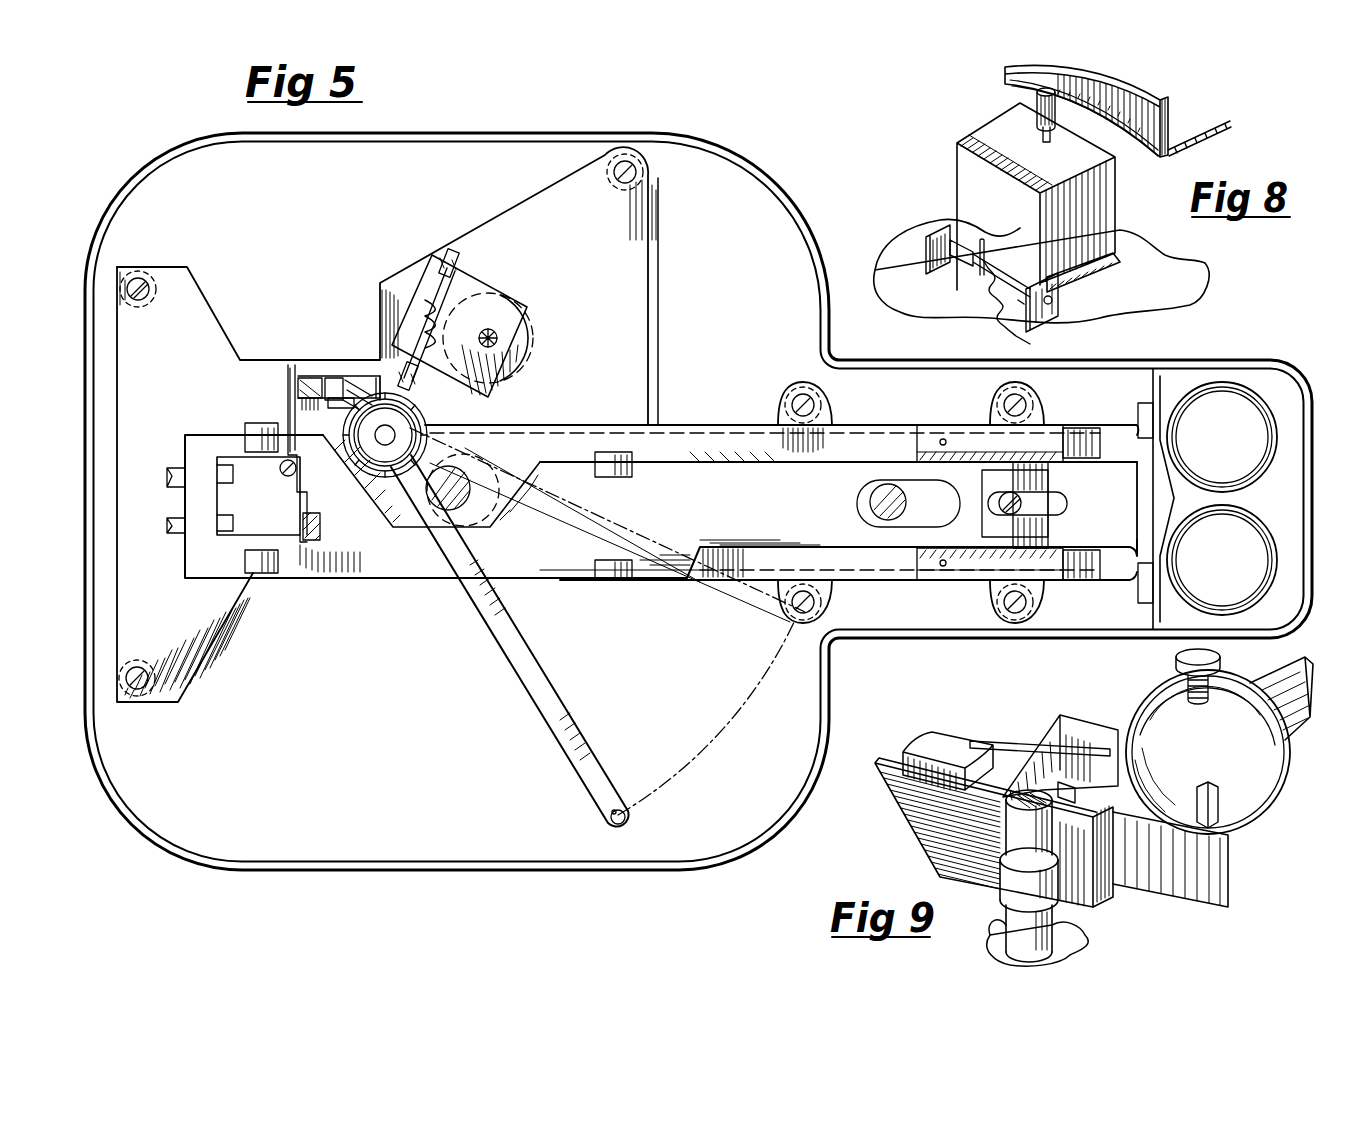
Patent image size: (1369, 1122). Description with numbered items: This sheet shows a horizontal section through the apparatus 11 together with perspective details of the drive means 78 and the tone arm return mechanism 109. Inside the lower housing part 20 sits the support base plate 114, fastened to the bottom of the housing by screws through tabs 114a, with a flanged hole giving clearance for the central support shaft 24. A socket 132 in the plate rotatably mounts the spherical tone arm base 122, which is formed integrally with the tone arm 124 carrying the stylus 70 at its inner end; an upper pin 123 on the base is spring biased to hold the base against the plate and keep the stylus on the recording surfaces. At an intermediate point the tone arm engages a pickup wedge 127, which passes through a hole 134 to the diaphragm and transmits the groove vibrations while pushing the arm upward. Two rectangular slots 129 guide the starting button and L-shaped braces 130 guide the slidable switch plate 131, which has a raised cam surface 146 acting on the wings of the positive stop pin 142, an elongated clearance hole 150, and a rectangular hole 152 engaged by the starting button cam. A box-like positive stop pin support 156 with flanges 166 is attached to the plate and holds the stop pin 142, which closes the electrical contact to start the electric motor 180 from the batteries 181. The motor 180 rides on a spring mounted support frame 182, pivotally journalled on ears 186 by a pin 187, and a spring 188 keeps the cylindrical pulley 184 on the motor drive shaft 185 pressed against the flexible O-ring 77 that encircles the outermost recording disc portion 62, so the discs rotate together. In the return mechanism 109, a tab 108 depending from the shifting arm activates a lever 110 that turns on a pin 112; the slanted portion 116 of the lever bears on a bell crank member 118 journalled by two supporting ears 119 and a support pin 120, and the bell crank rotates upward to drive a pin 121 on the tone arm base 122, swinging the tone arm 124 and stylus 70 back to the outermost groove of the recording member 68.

In FIG. 5, the housing 11 is at (727, 150).
In FIG. 5, the lower housing part 20 is at (350, 731).
In FIG. 5, the central support shaft 24 is at (872, 495).
In FIG. 8, the recording disc portion 62 is at (1166, 138).
In FIG. 8, the recording member 68 is at (1200, 140).
In FIG. 5, the stylus 70 is at (611, 817).
In FIG. 8, the flexible O-ring 77 is at (1156, 150).
In FIG. 5, the drive means 78 is at (491, 295).
In FIG. 8, the drive means 78 is at (1011, 222).
In FIG. 5, the tab 108 is at (321, 540).
In FIG. 9, the tab 108 is at (1220, 806).
In FIG. 9, the tone arm return mechanism 109 is at (1080, 802).
In FIG. 5, the lever 110 is at (289, 505).
In FIG. 9, the lever 110 is at (1184, 886).
In FIG. 5, the pin 112 is at (283, 473).
In FIG. 9, the pin 112 is at (1014, 918).
In FIG. 5, the support base plate 114 is at (182, 364).
In FIG. 8, the support base plate 114 is at (1182, 270).
In FIG. 9, the support base plate 114 is at (1082, 941).
In FIG. 5, the tabs 114a is at (608, 160).
In FIG. 5, the slanted portion 116 is at (303, 378).
In FIG. 9, the slanted portion 116 is at (921, 835).
In FIG. 5, the bell crank member 118 is at (314, 378).
In FIG. 9, the bell crank member 118 is at (926, 752).
In FIG. 5, the supporting ears 119 is at (343, 378).
In FIG. 9, the supporting ears 119 is at (1068, 790).
In FIG. 5, the support pin 120 is at (333, 402).
In FIG. 9, the support pin 120 is at (1066, 795).
In FIG. 5, the pin 121 is at (379, 372).
In FIG. 9, the pin 121 is at (988, 740).
In FIG. 5, the spherical tone arm base 122 is at (421, 422).
In FIG. 9, the spherical tone arm base 122 is at (1242, 744).
In FIG. 5, the upper pin 123 is at (372, 445).
In FIG. 9, the upper pin 123 is at (1190, 656).
In FIG. 5, the tone arm 124 is at (520, 680).
In FIG. 9, the tone arm 124 is at (1302, 716).
In FIG. 5, the pickup wedge 127 is at (462, 508).
In FIG. 5, the rectangular slots 129 is at (168, 525).
In FIG. 5, the L-shaped braces 130 is at (251, 437).
In FIG. 5, the switch plate 131 is at (736, 499).
In FIG. 5, the socket 132 is at (401, 408).
In FIG. 5, the hole 134 is at (470, 452).
In FIG. 5, the positive stop pin 142 is at (1060, 502).
In FIG. 5, the raised cam surface 146 is at (1046, 475).
In FIG. 5, the elongated clearance hole 150 is at (872, 508).
In FIG. 5, the rectangular hole 152 is at (301, 542).
In FIG. 5, the positive stop pin support 156 is at (1045, 450).
In FIG. 5, the flanges 166 is at (966, 440).
In FIG. 5, the electric motor 180 is at (536, 340).
In FIG. 8, the electric motor 180 is at (1097, 206).
In FIG. 5, the batteries 181 is at (1235, 429).
In FIG. 5, the support frame 182 is at (471, 284).
In FIG. 8, the support frame 182 is at (958, 152).
In FIG. 5, the cylindrical pulley 184 is at (499, 336).
In FIG. 8, the cylindrical pulley 184 is at (1037, 104).
In FIG. 8, the motor drive shaft 185 is at (1040, 136).
In FIG. 5, the ears 186 is at (462, 266).
In FIG. 8, the ears 186 is at (935, 232).
In FIG. 5, the pin 187 is at (446, 262).
In FIG. 8, the pin 187 is at (968, 264).
In FIG. 5, the spring 188 is at (426, 300).
In FIG. 8, the spring 188 is at (1001, 293).